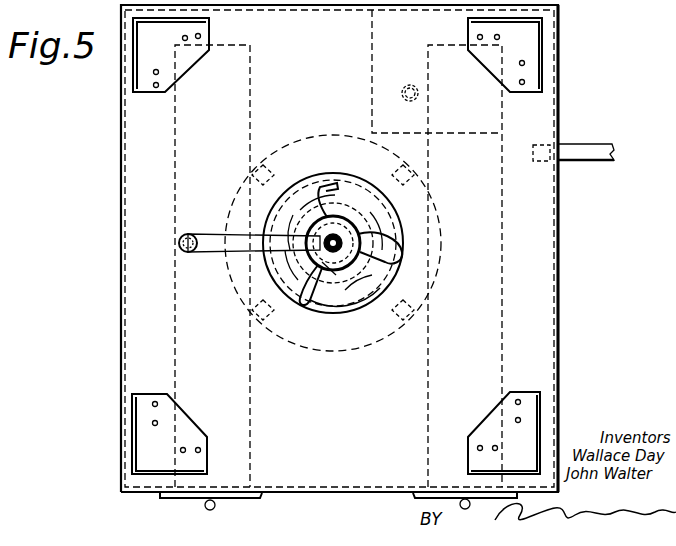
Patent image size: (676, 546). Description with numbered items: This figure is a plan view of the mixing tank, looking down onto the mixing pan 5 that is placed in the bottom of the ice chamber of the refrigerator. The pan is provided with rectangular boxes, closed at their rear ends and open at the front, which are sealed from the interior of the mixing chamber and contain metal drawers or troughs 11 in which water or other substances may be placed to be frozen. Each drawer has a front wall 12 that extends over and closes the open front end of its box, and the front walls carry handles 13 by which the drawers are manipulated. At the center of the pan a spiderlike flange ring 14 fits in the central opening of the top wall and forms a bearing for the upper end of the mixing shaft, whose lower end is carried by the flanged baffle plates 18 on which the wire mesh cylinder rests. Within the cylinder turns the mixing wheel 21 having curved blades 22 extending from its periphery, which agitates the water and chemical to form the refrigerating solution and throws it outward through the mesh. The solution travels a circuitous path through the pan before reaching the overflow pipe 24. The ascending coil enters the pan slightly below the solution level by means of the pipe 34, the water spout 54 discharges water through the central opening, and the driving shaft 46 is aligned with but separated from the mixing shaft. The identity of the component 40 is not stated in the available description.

The mixing pan 5 is at (138, 155).
The drawers or troughs 11 is at (175, 304).
The front walls 12 is at (163, 498).
The handles 13 is at (215, 507).
The spiderlike flange ring 14 is at (305, 193).
The flanged baffle plates 18 is at (312, 134).
The mixing wheel 21 is at (337, 298).
The curved blades 22 is at (378, 223).
The overflow pipe 24 is at (409, 85).
The pipe 34 is at (595, 150).
The cam 40 is at (345, 215).
The shaft 46 is at (300, 300).
The water spout 54 is at (220, 252).